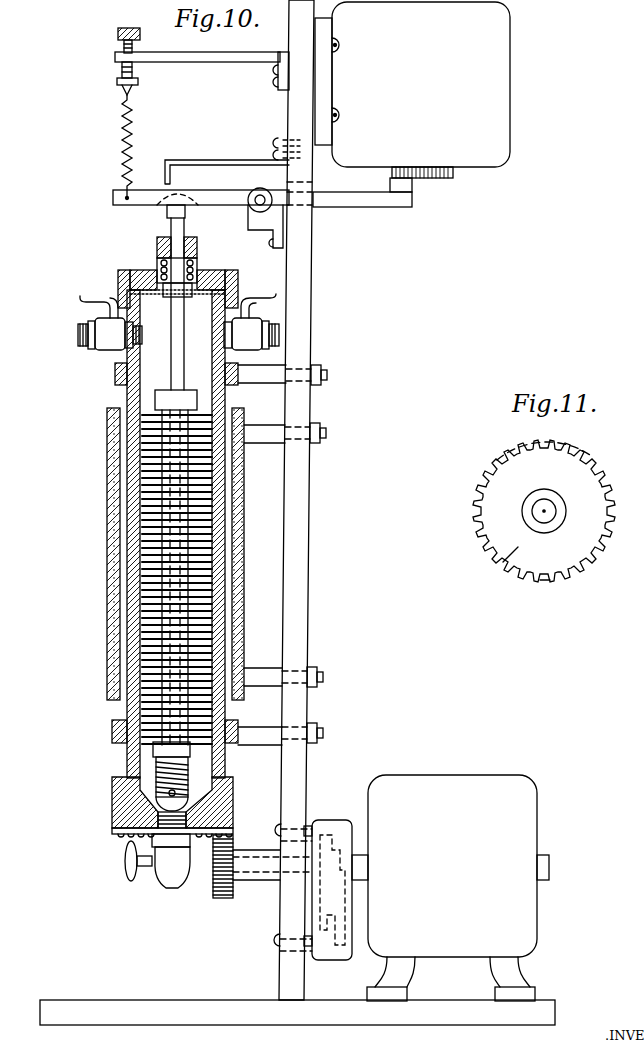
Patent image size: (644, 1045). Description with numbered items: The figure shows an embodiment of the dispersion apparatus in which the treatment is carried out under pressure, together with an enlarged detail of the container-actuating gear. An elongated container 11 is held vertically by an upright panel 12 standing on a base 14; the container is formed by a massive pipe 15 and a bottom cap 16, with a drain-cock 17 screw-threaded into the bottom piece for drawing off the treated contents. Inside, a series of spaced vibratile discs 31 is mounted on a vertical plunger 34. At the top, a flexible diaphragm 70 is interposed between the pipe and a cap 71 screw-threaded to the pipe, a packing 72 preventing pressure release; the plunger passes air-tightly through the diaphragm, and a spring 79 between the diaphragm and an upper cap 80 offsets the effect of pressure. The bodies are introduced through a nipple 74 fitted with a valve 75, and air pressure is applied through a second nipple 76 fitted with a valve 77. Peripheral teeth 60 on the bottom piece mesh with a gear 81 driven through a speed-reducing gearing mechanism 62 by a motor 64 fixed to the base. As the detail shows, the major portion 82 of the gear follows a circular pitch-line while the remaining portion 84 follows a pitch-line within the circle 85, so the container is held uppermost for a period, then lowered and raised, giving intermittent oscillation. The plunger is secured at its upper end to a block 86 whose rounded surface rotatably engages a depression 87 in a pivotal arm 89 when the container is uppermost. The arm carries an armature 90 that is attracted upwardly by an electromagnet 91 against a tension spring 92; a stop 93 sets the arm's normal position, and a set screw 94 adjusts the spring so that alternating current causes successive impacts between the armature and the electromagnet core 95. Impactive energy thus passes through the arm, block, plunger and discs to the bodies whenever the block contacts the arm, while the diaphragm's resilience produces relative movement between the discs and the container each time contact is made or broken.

In FIG. 10, the elongated container 11 is at (167, 534).
In FIG. 10, the upright panel 12 is at (307, 579).
In FIG. 10, the base 14 is at (131, 1008).
In FIG. 10, the pipe 15 is at (127, 388).
In FIG. 10, the bottom cap 16 is at (113, 805).
In FIG. 10, the drain-cock 17 is at (168, 872).
In FIG. 10, the plates or horizontal discs 31 is at (207, 520).
In FIG. 10, the vertical plunger 34 is at (171, 337).
In FIG. 10, the peripheral teeth 60 is at (127, 836).
In FIG. 10, the speed-reducing gearing mechanism 62 is at (331, 822).
In FIG. 10, the motor 64 is at (442, 783).
In FIG. 10, the flexible diaphragm 70 is at (163, 300).
In FIG. 10, the cap 71 is at (118, 290).
In FIG. 10, the packing 72 is at (131, 282).
In FIG. 10, the nipple 74 is at (133, 336).
In FIG. 10, the valve 75 is at (120, 337).
In FIG. 10, the nipple 76 is at (224, 338).
In FIG. 10, the valve 77 is at (236, 317).
In FIG. 10, the spring 79 is at (197, 272).
In FIG. 10, the upper cap 80 is at (188, 246).
In FIG. 10, the gear 81 is at (224, 897).
In FIG. 11, the gear 81 is at (507, 556).
In FIG. 11, the major portion of the gear 82 is at (546, 584).
In FIG. 11, the remaining portion of the gear 84 is at (583, 456).
In FIG. 11, the circle 85 is at (532, 442).
In FIG. 10, the block 86 is at (168, 219).
In FIG. 10, the depression 87 is at (165, 207).
In FIG. 10, the pivotal arm 89 is at (215, 194).
In FIG. 10, the armature 90 is at (412, 196).
In FIG. 10, the electromagnet 91 is at (508, 80).
In FIG. 10, the tension spring 92 is at (124, 130).
In FIG. 10, the stop 93 is at (223, 163).
In FIG. 10, the set screw 94 is at (129, 31).
In FIG. 10, the electromagnet core 95 is at (392, 170).